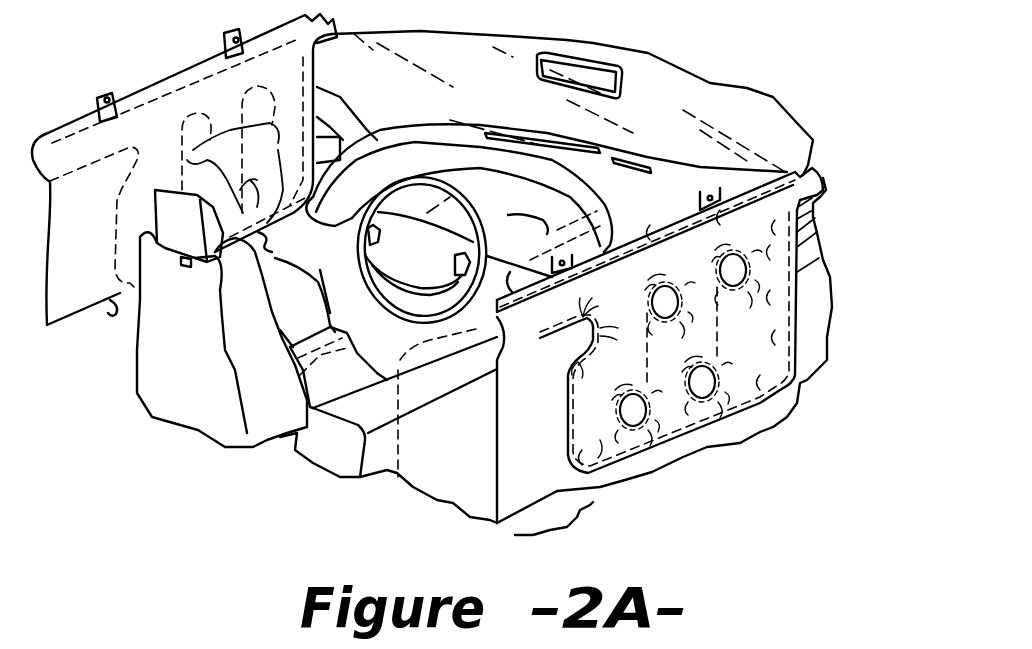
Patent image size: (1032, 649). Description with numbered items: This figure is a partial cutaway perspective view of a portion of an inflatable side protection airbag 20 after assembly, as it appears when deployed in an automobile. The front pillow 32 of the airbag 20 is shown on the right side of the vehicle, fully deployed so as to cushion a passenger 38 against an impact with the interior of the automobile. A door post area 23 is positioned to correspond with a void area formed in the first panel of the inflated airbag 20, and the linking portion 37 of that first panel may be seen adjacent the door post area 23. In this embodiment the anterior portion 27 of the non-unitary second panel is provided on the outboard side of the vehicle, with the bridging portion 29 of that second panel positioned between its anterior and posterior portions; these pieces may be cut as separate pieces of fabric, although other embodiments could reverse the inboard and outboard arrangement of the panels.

The inflatable side protection airbag 20 is at (661, 225).
The door post area 23 is at (569, 531).
The anterior portion 27 is at (780, 325).
The bridging portion 29 is at (540, 312).
The front pillow 32 is at (738, 447).
The linking portion 37 is at (560, 427).
The passenger 38 is at (360, 415).